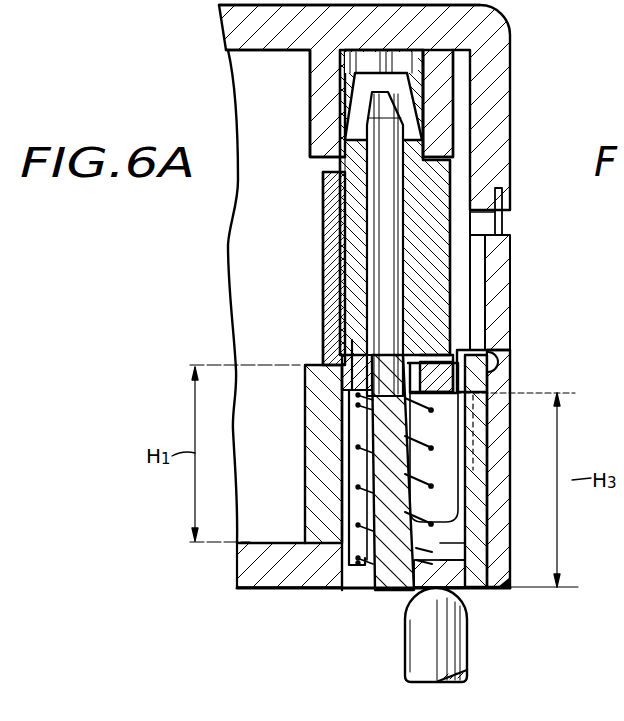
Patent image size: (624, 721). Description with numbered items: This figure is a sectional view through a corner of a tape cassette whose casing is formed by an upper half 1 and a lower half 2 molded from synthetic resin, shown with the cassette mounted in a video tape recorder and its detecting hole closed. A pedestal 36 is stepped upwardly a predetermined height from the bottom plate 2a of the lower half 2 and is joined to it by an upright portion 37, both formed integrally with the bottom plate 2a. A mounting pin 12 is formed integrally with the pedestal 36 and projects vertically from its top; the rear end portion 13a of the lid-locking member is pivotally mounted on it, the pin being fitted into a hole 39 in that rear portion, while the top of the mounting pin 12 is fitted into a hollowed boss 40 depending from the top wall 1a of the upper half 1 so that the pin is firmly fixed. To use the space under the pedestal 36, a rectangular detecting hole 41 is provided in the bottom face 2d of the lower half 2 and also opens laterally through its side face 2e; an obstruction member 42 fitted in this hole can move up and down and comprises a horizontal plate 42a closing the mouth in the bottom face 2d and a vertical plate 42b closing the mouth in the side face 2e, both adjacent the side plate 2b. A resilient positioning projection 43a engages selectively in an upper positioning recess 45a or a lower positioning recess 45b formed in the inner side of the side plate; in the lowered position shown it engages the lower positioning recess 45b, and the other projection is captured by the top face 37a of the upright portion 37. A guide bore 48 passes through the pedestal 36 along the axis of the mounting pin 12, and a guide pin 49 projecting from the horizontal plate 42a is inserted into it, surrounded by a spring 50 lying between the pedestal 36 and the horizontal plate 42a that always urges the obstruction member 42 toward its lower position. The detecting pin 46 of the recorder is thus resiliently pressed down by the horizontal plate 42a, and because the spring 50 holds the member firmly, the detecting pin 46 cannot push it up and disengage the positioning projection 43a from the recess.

The upper half 1 is at (224, 50).
The top wall 1a is at (226, 43).
The lower half 2 is at (242, 591).
The bottom plate 2a is at (246, 572).
The side plate 2b is at (497, 257).
The bottom face 2d is at (306, 591).
The side face 2e is at (509, 290).
The mounting pin 12 is at (352, 137).
The rear end portion 13a is at (327, 250).
The pedestal 36 is at (470, 395).
The upright portion 37 is at (316, 461).
The top face 37a is at (347, 365).
The hole 39 is at (338, 195).
The hollowed boss 40 is at (447, 133).
The detecting hole 41 is at (400, 597).
The obstruction member 42 is at (489, 596).
The horizontal plate 42a is at (458, 578).
The vertical plate 42b is at (483, 510).
The positioning projection 43a is at (455, 362).
The upper positioning recess 45a is at (489, 232).
The lower positioning recess 45b is at (497, 365).
The detecting pin 46 is at (455, 651).
The guide bore 48 is at (375, 285).
The guide pin 49 is at (360, 417).
The spring 50 is at (362, 570).